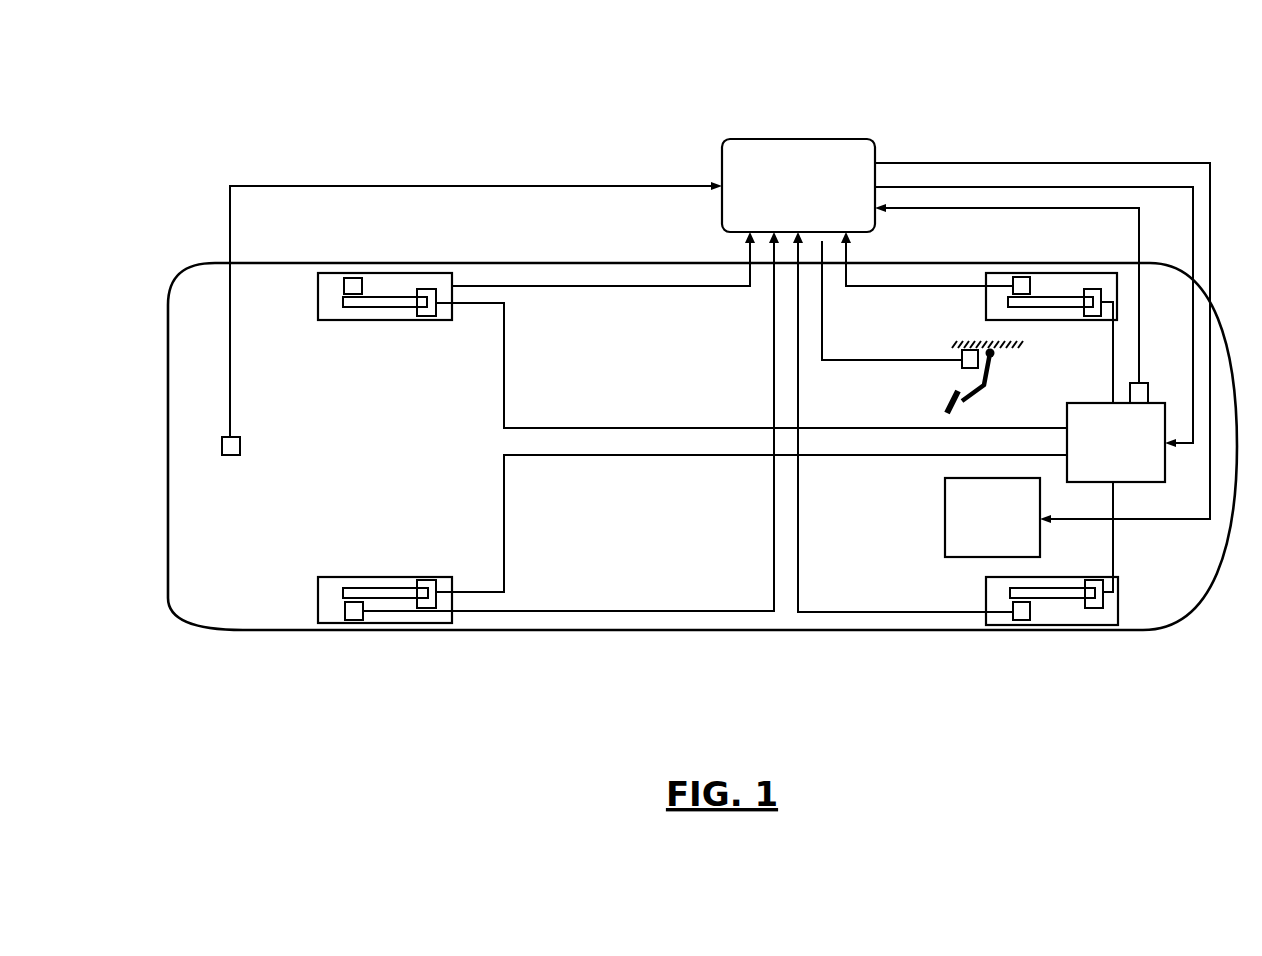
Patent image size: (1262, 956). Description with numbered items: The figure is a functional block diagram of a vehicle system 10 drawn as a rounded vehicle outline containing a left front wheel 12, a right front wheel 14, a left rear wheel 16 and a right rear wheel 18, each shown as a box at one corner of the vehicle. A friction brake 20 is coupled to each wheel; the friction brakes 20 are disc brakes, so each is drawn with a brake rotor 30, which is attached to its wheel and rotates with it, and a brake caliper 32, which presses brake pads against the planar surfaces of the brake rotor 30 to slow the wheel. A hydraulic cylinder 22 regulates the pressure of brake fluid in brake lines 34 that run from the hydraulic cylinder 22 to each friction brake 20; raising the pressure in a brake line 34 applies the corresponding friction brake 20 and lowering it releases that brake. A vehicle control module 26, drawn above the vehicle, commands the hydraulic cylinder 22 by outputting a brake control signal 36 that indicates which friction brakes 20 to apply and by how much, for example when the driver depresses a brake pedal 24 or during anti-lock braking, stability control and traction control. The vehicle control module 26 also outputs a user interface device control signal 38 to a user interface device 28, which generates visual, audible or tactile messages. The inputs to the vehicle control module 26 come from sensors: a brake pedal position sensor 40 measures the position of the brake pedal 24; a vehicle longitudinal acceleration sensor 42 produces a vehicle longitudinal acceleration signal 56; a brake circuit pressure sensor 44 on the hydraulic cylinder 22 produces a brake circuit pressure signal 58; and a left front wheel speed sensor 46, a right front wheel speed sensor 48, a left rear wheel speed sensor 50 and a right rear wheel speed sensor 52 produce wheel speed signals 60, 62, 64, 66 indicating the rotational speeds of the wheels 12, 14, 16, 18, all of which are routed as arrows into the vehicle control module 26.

The vehicle system 10 is at (180, 43).
The left front wheel 12 is at (986, 297).
The right front wheel 14 is at (986, 601).
The left rear wheel 16 is at (318, 296).
The right rear wheel 18 is at (318, 601).
The friction brake 20 is at (720, 447).
The hydraulic cylinder 22 is at (1065, 413).
The brake pedal 24 is at (985, 383).
The vehicle control module 26 is at (768, 139).
The user interface device 28 is at (945, 500).
The brake rotor 30 is at (343, 302).
The brake caliper 32 is at (437, 311).
The brake line 34 is at (652, 425).
The brake control signal 36 is at (1016, 188).
The user interface device control signal 38 is at (993, 162).
The brake pedal position sensor 40 is at (957, 379).
The vehicle longitudinal acceleration sensor 42 is at (240, 437).
The brake circuit pressure sensor 44 is at (1148, 383).
The left front wheel speed sensor 46 is at (1018, 277).
The right front wheel speed sensor 48 is at (1020, 622).
The left rear wheel speed sensor 50 is at (353, 277).
The right rear wheel speed sensor 52 is at (353, 622).
The vehicle longitudinal acceleration signal 56 is at (232, 393).
The brake circuit pressure signal 58 is at (1135, 229).
The wheel speed signal 60 is at (889, 290).
The wheel speed signal 62 is at (800, 404).
The wheel speed signal 64 is at (667, 288).
The wheel speed signal 66 is at (772, 403).